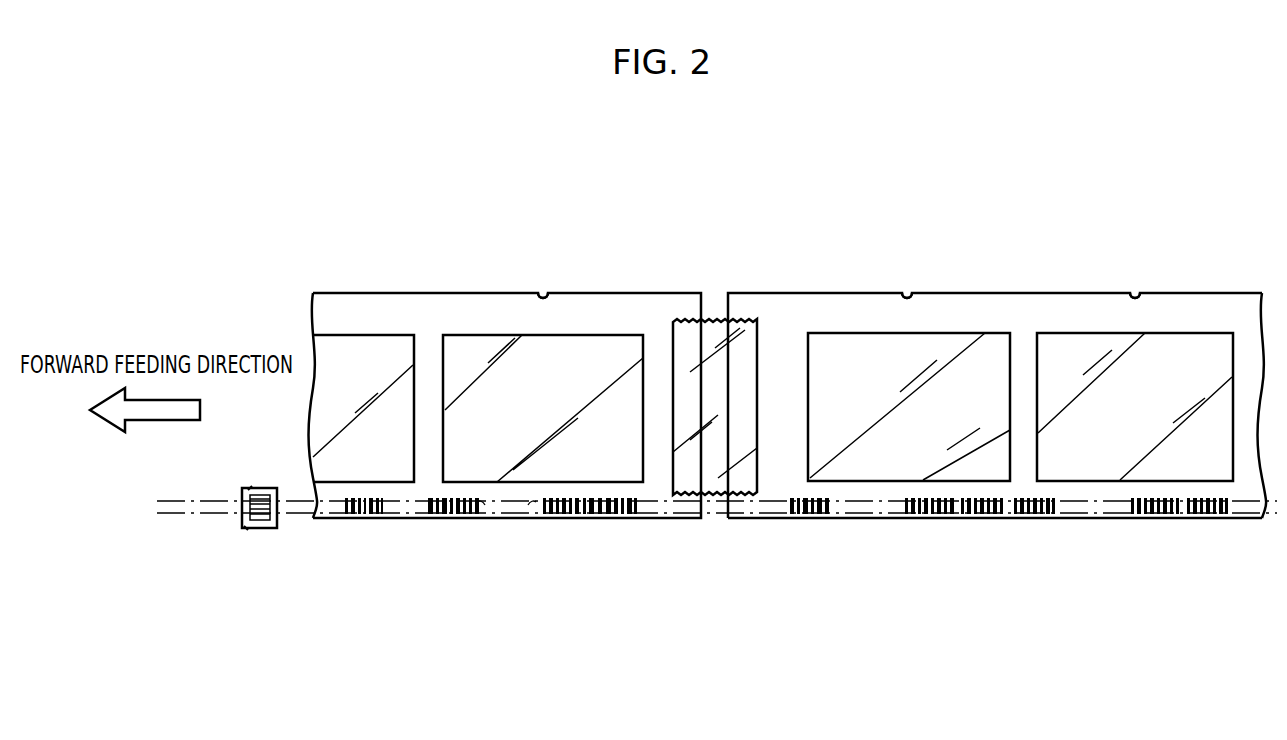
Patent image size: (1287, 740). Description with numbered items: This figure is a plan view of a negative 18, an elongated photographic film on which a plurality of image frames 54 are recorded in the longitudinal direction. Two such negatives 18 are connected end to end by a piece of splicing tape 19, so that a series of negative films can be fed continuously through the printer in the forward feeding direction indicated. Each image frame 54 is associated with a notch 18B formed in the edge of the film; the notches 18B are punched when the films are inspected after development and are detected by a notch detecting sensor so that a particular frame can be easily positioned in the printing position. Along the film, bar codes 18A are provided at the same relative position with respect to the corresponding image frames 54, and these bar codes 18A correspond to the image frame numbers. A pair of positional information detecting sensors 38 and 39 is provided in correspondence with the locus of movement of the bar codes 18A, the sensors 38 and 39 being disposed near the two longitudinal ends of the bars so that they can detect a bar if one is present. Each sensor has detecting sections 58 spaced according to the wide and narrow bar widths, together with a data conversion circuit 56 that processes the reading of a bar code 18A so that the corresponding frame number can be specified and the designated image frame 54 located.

The negative 18 is at (468, 293).
The bar codes 18A is at (338, 513).
The notches 18B is at (543, 293).
The splicing tape 19 is at (716, 322).
The image frames 54 is at (382, 345).
The data conversion circuit 56 is at (506, 507).
The positional information detecting sensor 38 is at (258, 528).
The positional information detecting sensor 39 is at (258, 488).
The detecting sections 58 is at (248, 486).